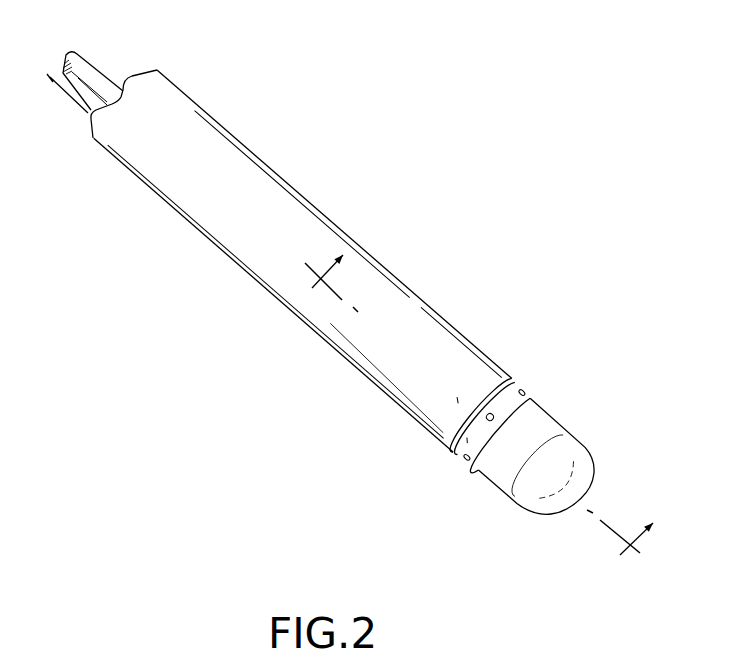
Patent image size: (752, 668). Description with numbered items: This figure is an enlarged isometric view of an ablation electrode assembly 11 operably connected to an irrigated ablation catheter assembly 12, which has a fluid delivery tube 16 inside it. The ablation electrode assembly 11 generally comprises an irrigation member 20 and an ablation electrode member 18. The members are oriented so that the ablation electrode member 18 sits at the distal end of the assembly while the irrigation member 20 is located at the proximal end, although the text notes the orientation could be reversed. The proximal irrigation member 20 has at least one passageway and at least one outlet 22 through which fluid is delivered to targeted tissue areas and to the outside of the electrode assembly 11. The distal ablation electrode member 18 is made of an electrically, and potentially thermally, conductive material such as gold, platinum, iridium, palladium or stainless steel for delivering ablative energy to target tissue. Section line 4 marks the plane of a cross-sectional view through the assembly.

The ablation electrode assembly 11 is at (335, 273).
The irrigated ablation catheter assembly 12 is at (413, 278).
The fluid delivery tube 16 is at (112, 75).
The ablation electrode member 18 is at (593, 457).
The irrigation member 20 is at (515, 378).
The outlet 22 is at (482, 417).
The section line 4- 4 is at (474, 409).